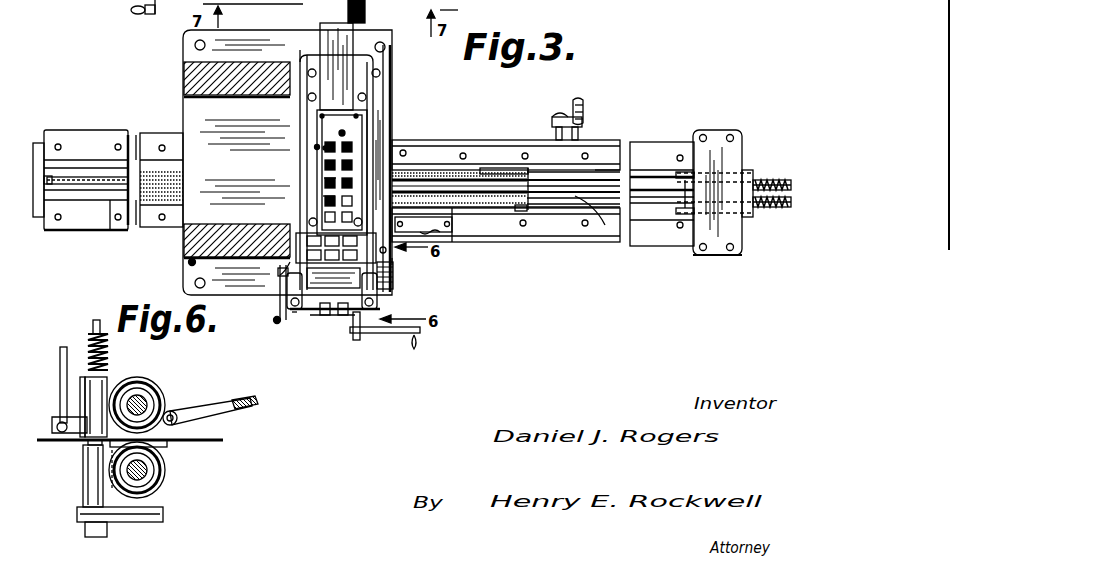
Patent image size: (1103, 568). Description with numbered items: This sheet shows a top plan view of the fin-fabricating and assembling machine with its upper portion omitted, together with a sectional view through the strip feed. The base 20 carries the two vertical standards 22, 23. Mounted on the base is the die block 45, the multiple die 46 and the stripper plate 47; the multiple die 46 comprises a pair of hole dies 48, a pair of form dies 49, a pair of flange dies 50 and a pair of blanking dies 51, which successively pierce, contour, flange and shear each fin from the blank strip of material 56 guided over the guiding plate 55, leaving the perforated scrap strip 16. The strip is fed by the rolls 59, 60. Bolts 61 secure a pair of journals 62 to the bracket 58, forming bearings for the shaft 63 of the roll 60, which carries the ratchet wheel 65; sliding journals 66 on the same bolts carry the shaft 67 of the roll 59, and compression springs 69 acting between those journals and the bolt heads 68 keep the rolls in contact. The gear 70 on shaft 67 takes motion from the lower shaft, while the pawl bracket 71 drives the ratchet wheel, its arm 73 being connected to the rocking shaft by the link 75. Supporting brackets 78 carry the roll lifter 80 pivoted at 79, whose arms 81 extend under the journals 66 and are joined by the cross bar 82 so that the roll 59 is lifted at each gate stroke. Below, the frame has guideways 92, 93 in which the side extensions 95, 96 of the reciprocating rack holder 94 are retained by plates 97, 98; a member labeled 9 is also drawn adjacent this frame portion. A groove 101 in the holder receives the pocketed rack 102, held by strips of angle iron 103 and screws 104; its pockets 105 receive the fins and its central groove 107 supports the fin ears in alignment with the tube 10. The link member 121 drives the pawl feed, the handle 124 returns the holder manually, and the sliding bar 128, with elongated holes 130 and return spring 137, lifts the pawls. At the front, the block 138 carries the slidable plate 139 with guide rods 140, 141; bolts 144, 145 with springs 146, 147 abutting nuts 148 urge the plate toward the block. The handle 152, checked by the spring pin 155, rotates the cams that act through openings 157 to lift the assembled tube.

In FIG. 3, the feed bar 9 is at (658, 148).
In FIG. 3, the tube 10 is at (593, 177).
In FIG. 3, the perforated strip of scrap material 16 is at (329, 318).
In FIG. 6, the perforated strip of scrap material 16 is at (57, 425).
In FIG. 3, the base 20 is at (287, 162).
In FIG. 3, the vertical standard 22 is at (201, 232).
In FIG. 3, the vertical standard 23 is at (212, 96).
In FIG. 3, the die block 45 is at (360, 118).
In FIG. 3, the multiple die 46 is at (322, 150).
In FIG. 3, the stripper plate 47 is at (367, 113).
In FIG. 3, the hole dies 48 is at (313, 147).
In FIG. 3, the form dies 49 is at (348, 147).
In FIG. 3, the flange dies 50 is at (323, 178).
In FIG. 3, the blanking dies 51 is at (325, 196).
In FIG. 3, the guiding plate 55 is at (360, 37).
In FIG. 3, the blank strip of material 56 is at (392, 55).
In FIG. 3, the bracket 58 is at (306, 310).
In FIG. 6, the bracket 58 is at (78, 517).
In FIG. 3, the roll 59 is at (310, 308).
In FIG. 6, the roll 59 is at (156, 378).
In FIG. 6, the roll 60 is at (164, 472).
In FIG. 3, the bolts 61 is at (381, 303).
In FIG. 6, the bolts 61 is at (112, 362).
In FIG. 6, the journals 62 is at (135, 507).
In FIG. 6, the shaft 63 is at (128, 484).
In FIG. 3, the ratchet wheel 65 is at (282, 263).
In FIG. 6, the ratchet wheel 65 is at (164, 483).
In FIG. 3, the journals 66 is at (295, 312).
In FIG. 6, the journals 66 is at (125, 392).
In FIG. 6, the shaft 67 is at (143, 407).
In FIG. 6, the bolt heads 68 is at (96, 332).
In FIG. 6, the compression springs 69 is at (92, 352).
In FIG. 3, the gear 70 is at (380, 290).
In FIG. 3, the pawl bracket 71 is at (280, 313).
In FIG. 3, the arm 73 is at (264, 322).
In FIG. 6, the arm 73 is at (67, 442).
In FIG. 3, the link 75 is at (278, 322).
In FIG. 6, the link 75 is at (62, 384).
In FIG. 3, the supporting brackets 78 is at (388, 259).
In FIG. 6, the supporting brackets 78 is at (177, 433).
In FIG. 6, the pivot 79 is at (180, 413).
In FIG. 6, the roll lifter 80 is at (230, 407).
In FIG. 6, the arms 81 is at (84, 447).
In FIG. 3, the cross bar 82 is at (312, 231).
In FIG. 6, the cross bar 82 is at (260, 403).
In FIG. 3, the guideway 92 is at (110, 165).
In FIG. 3, the guideway 93 is at (113, 200).
In FIG. 3, the rack holder 94 is at (528, 170).
In FIG. 3, the side extension 95 is at (137, 160).
In FIG. 3, the side extension 96 is at (135, 205).
In FIG. 3, the plate 97 is at (79, 146).
In FIG. 3, the plate 98 is at (85, 218).
In FIG. 3, the groove 101 is at (507, 210).
In FIG. 3, the pocketed rack 102 is at (493, 170).
In FIG. 3, the strips of angle iron 103 is at (513, 212).
In FIG. 3, the screws 104 is at (521, 212).
In FIG. 3, the pockets 105 is at (470, 210).
In FIG. 3, the groove 107 is at (440, 170).
In FIG. 3, the link member 121 is at (190, 263).
In FIG. 3, the handle 124 is at (397, 335).
In FIG. 3, the sliding bar 128 is at (452, 247).
In FIG. 3, the elongated holes 130 is at (433, 227).
In FIG. 3, the spring 137 is at (423, 224).
In FIG. 3, the block 138 is at (710, 135).
In FIG. 3, the plate 139 is at (747, 170).
In FIG. 3, the guide rod 140 is at (682, 172).
In FIG. 3, the guide rod 141 is at (685, 225).
In FIG. 3, the bolt 144 is at (775, 165).
In FIG. 3, the bolt 145 is at (785, 215).
In FIG. 3, the spring 146 is at (788, 163).
In FIG. 3, the spring 147 is at (775, 207).
In FIG. 3, the nuts 148 is at (745, 253).
In FIG. 3, the handle 152 is at (576, 100).
In FIG. 3, the spring pin 155 is at (582, 132).
In FIG. 3, the openings 157 is at (605, 225).